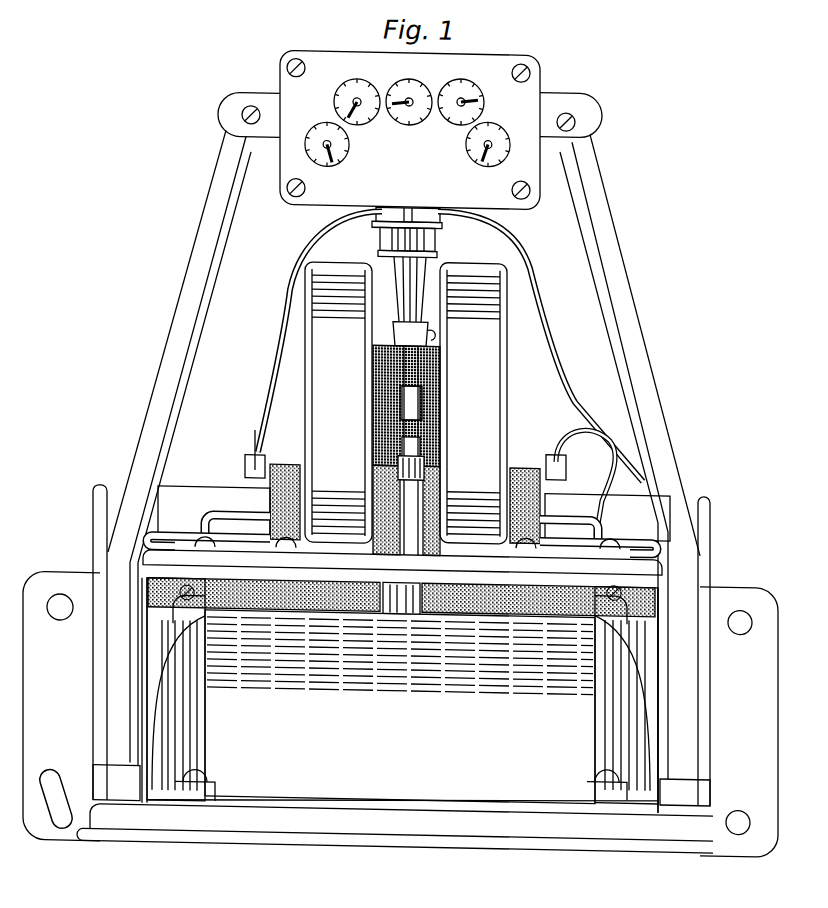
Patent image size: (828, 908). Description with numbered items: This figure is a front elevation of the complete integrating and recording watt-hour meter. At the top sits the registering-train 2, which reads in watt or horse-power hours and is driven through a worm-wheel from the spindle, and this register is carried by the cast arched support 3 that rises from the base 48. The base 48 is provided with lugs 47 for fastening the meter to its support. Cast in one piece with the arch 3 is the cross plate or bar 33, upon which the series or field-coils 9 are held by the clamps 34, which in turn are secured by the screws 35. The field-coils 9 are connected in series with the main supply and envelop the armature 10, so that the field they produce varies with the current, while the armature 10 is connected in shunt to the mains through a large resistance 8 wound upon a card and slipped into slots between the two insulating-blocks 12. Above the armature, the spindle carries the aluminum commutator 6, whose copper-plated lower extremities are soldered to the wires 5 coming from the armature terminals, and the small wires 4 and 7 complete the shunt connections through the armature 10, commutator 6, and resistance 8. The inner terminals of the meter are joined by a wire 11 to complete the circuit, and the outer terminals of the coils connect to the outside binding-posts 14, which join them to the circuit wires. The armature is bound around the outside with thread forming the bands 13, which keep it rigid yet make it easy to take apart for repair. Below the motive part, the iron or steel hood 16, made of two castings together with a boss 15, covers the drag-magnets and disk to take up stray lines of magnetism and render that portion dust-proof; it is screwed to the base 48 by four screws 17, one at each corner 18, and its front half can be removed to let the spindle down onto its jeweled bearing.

The registering-train 2 is at (410, 129).
The arched support 3 is at (401, 449).
The small wires 4 is at (313, 345).
The wires 5 is at (428, 276).
The commutator 6 is at (414, 241).
The small wire 7 is at (572, 438).
The resistance 8 is at (301, 472).
The series or field-coils 9 is at (406, 403).
The armature 10 is at (432, 409).
The wire 11 is at (245, 523).
The insulating-blocks 12 is at (414, 516).
The windings or bands 13 is at (376, 385).
The binding-posts 14 is at (517, 254).
The boss 15 is at (403, 614).
The hood 16 is at (400, 695).
The screws 17 is at (197, 787).
The corner 18 is at (607, 800).
The cross plate or bar 33 is at (402, 570).
The clamps 34 is at (287, 552).
The screws 35 is at (524, 548).
The lugs 47 is at (400, 714).
The base 48 is at (400, 846).